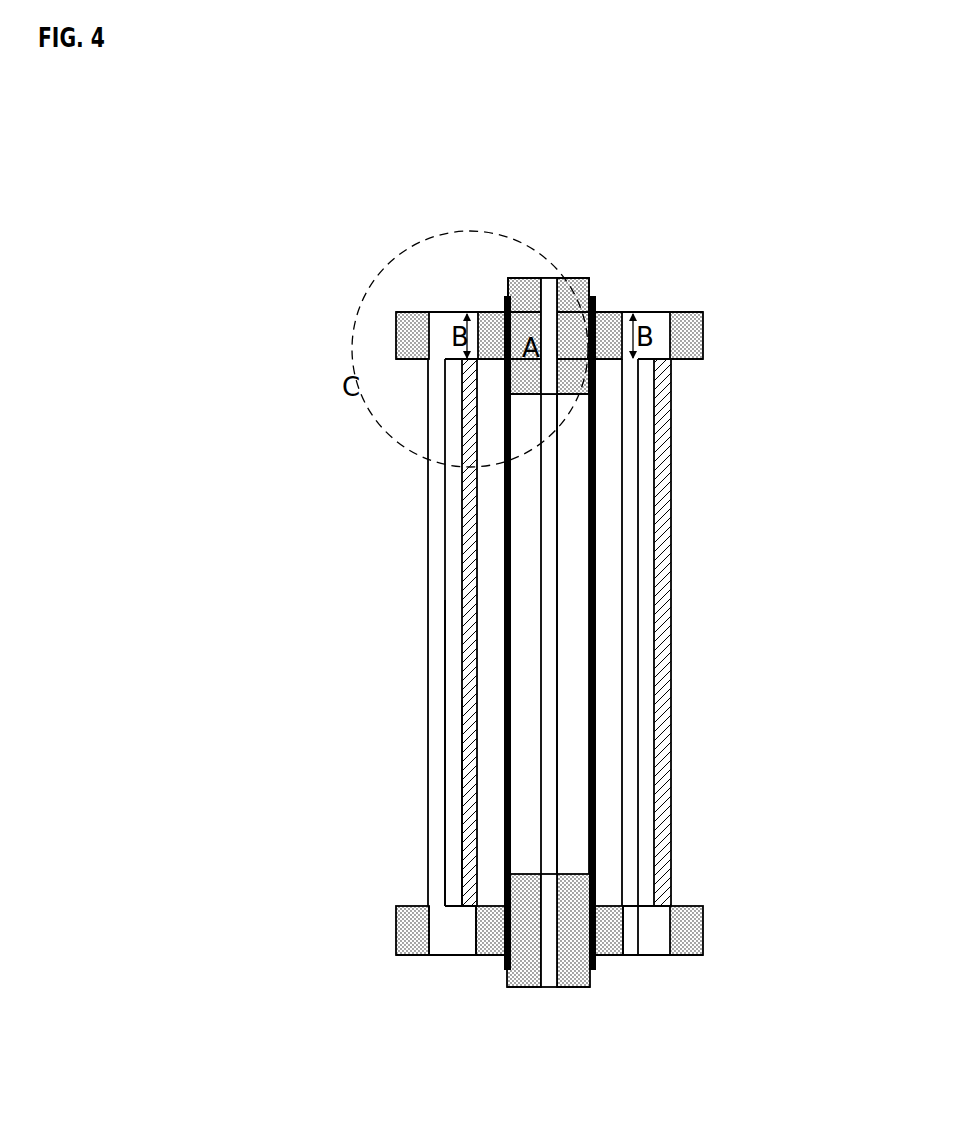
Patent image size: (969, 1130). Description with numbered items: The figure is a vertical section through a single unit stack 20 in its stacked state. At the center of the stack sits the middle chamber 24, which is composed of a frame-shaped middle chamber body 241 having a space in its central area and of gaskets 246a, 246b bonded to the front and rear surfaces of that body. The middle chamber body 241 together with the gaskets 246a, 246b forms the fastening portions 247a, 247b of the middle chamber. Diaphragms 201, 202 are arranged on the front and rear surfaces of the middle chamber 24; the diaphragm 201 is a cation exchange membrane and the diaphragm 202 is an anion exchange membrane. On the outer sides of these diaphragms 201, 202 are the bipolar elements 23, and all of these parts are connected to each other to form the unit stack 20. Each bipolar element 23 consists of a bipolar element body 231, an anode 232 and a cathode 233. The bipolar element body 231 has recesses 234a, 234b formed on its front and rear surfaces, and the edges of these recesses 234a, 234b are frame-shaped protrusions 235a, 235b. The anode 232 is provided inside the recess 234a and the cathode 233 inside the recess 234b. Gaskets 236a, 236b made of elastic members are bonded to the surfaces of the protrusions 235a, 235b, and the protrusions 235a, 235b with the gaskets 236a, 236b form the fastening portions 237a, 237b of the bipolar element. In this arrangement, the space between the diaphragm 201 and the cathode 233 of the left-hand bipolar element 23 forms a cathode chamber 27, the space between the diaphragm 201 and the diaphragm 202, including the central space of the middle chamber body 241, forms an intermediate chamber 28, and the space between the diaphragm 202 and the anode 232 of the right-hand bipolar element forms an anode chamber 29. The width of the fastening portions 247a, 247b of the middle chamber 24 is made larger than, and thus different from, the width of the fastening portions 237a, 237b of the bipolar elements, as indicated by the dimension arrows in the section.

The unit stack 20 is at (550, 178).
The bipolar element 23 is at (452, 268).
The middle chamber 24 is at (543, 262).
The cathode chamber 27 is at (502, 645).
The intermediate chamber 28 is at (535, 645).
The anode chamber 29 is at (622, 648).
The diaphragm 201 is at (507, 572).
The diaphragm 202 is at (595, 543).
The bipolar element body 231 is at (440, 322).
The anode 232 is at (435, 813).
The cathode 233 is at (467, 848).
The recess 234a is at (443, 757).
The recess 234b is at (470, 668).
The protrusion 235a is at (436, 938).
The protrusion 235b is at (467, 938).
The gasket 236a is at (397, 932).
The gasket 236b is at (493, 955).
The fastening portion 237a is at (332, 1010).
The fastening portion 237b is at (452, 1047).
The middle chamber body 241 is at (548, 973).
The gasket 246a is at (530, 990).
The gasket 246b is at (577, 990).
The fastening portion 247a is at (562, 1060).
The fastening portion 247b is at (662, 1060).